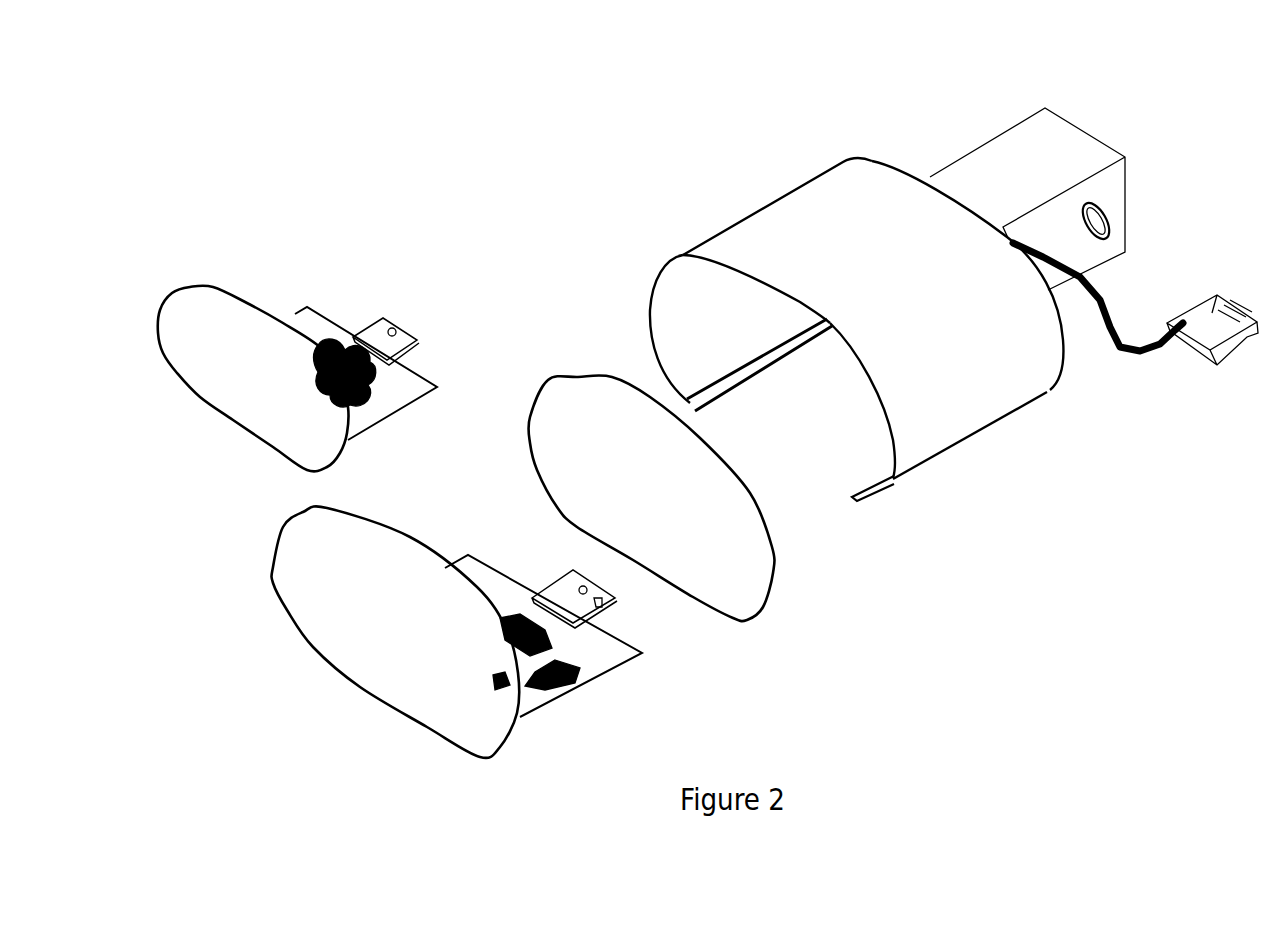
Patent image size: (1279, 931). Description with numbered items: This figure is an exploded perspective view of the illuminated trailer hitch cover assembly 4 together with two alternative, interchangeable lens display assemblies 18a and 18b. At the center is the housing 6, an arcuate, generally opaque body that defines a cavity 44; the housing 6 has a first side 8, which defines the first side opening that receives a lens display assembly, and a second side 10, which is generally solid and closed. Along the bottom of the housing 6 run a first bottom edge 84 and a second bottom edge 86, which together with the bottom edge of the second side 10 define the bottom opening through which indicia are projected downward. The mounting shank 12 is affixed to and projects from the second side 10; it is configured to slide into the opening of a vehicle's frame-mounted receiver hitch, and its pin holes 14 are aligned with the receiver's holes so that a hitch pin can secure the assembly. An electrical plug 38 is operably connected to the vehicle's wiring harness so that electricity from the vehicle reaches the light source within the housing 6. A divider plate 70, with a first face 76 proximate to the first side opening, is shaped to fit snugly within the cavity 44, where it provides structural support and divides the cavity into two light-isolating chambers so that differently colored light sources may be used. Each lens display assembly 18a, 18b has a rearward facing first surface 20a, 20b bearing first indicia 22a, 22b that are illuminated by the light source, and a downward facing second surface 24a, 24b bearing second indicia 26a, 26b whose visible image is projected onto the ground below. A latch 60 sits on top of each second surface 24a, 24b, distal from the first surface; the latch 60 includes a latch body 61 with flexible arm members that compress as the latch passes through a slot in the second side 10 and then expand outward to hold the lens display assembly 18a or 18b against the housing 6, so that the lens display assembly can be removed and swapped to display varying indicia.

The illuminated trailer hitch cover assembly 4 is at (602, 131).
The housing 6 is at (793, 192).
The first side 8 is at (683, 254).
The second side 10 is at (883, 158).
The mounting shank 12 is at (1093, 143).
The pin holes 14 is at (1108, 223).
The electrical plug 38 is at (1208, 299).
The lens display assembly 18a is at (412, 528).
The lens display assembly 18b is at (232, 266).
The first surface 20a is at (366, 634).
The first indicia 22a is at (318, 648).
The first surface 20b is at (249, 380).
The first indicia 22b is at (212, 398).
The second surface 24a is at (582, 636).
The second indicia 26a is at (580, 670).
The second surface 24b is at (359, 350).
The second indicia 26b is at (314, 347).
The latch 60 is at (399, 334).
The latch body 61 is at (692, 636).
The divider plate 70 is at (765, 578).
The first face 76 is at (557, 412).
The first bottom edge 84 is at (858, 501).
The second bottom edge 86 is at (693, 407).
The cavity 44 is at (826, 406).